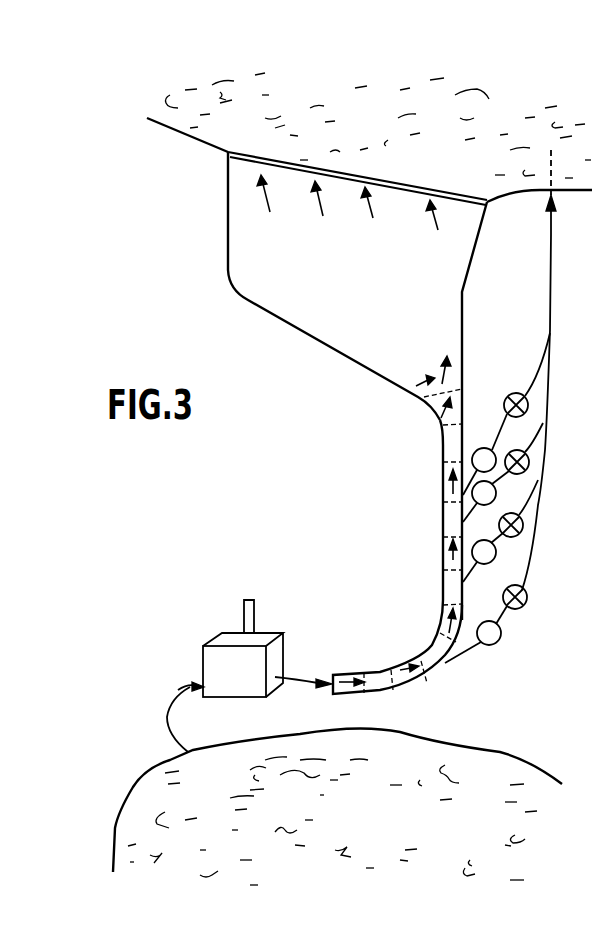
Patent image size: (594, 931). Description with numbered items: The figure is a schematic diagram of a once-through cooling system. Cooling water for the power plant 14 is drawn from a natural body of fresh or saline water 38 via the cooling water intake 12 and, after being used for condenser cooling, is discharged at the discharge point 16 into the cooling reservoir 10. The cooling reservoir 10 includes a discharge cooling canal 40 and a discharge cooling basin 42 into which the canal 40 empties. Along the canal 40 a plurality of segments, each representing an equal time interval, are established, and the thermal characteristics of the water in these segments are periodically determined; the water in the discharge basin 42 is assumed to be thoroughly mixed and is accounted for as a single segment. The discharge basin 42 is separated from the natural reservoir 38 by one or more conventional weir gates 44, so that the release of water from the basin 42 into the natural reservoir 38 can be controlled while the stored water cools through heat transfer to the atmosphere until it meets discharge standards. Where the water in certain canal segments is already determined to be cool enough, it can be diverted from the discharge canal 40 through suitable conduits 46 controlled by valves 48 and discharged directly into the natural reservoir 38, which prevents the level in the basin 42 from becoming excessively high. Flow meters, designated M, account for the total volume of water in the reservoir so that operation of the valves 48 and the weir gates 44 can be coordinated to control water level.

The cooling reservoir 10 is at (392, 504).
The cooling water intake 12 is at (178, 690).
The power plant 14 is at (256, 697).
The discharge point 16 is at (281, 680).
The natural body of fresh or saline water 38 is at (436, 110).
The discharge cooling canal 40 is at (442, 521).
The discharge cooling basin 42 is at (382, 310).
The weir gates 44 is at (398, 190).
The conduits 46 is at (548, 345).
The valves 48 is at (510, 393).